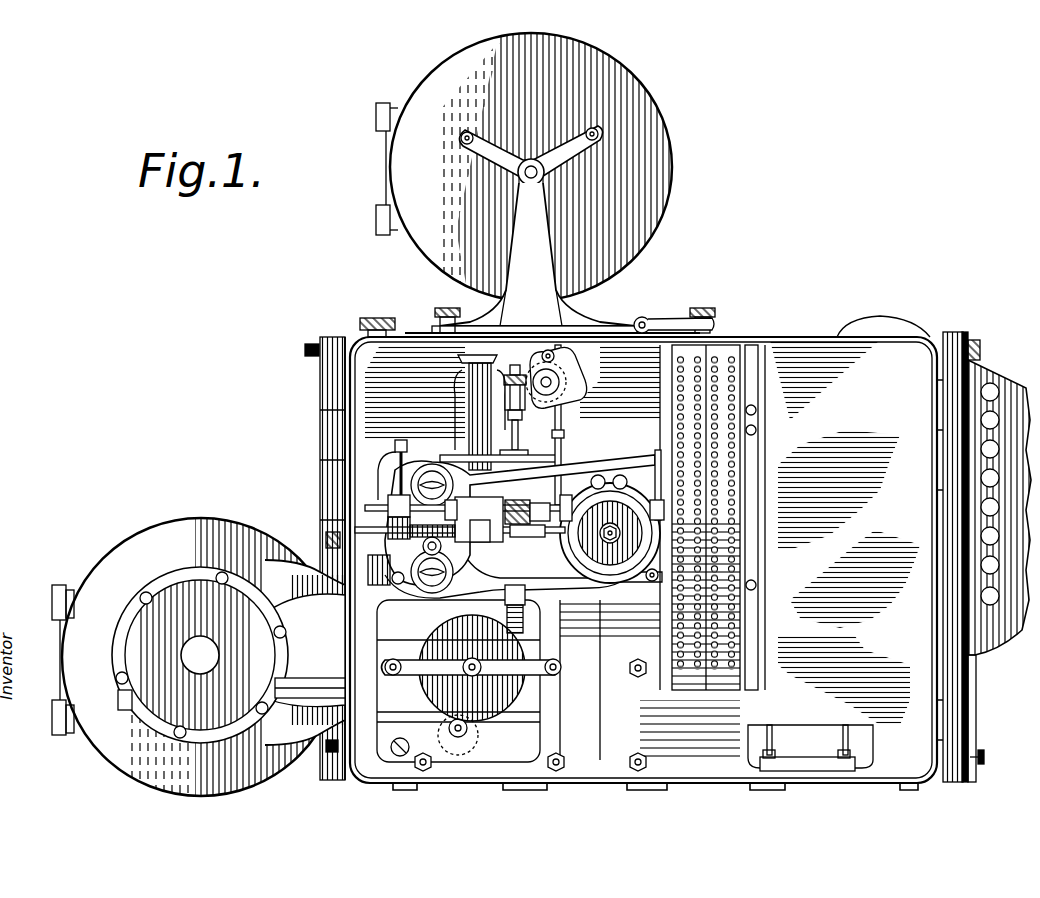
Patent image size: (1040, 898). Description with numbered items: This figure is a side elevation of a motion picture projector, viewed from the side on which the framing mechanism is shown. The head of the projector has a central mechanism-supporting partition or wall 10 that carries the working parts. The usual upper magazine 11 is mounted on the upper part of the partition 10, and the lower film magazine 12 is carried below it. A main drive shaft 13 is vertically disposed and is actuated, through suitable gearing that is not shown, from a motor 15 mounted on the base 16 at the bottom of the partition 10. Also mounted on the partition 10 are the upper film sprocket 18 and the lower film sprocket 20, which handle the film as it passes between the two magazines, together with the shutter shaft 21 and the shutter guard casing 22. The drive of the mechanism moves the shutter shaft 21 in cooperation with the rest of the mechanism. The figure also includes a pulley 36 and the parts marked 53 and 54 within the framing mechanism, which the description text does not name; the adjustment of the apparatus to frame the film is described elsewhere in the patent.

The partition 10 is at (621, 549).
The upper magazine 11 is at (640, 238).
The lower film magazine 12 is at (196, 510).
The main drive shaft 13 is at (502, 425).
The motor 15 is at (810, 748).
The base 16 is at (716, 778).
The upper film sprocket 18 is at (570, 388).
The lower film sprocket 20 is at (595, 580).
The shutter shaft 21 is at (388, 504).
The shutter guard casing 22 is at (725, 355).
The pulley 36 is at (570, 556).
The block 53 is at (480, 519).
The lever 54 is at (388, 532).